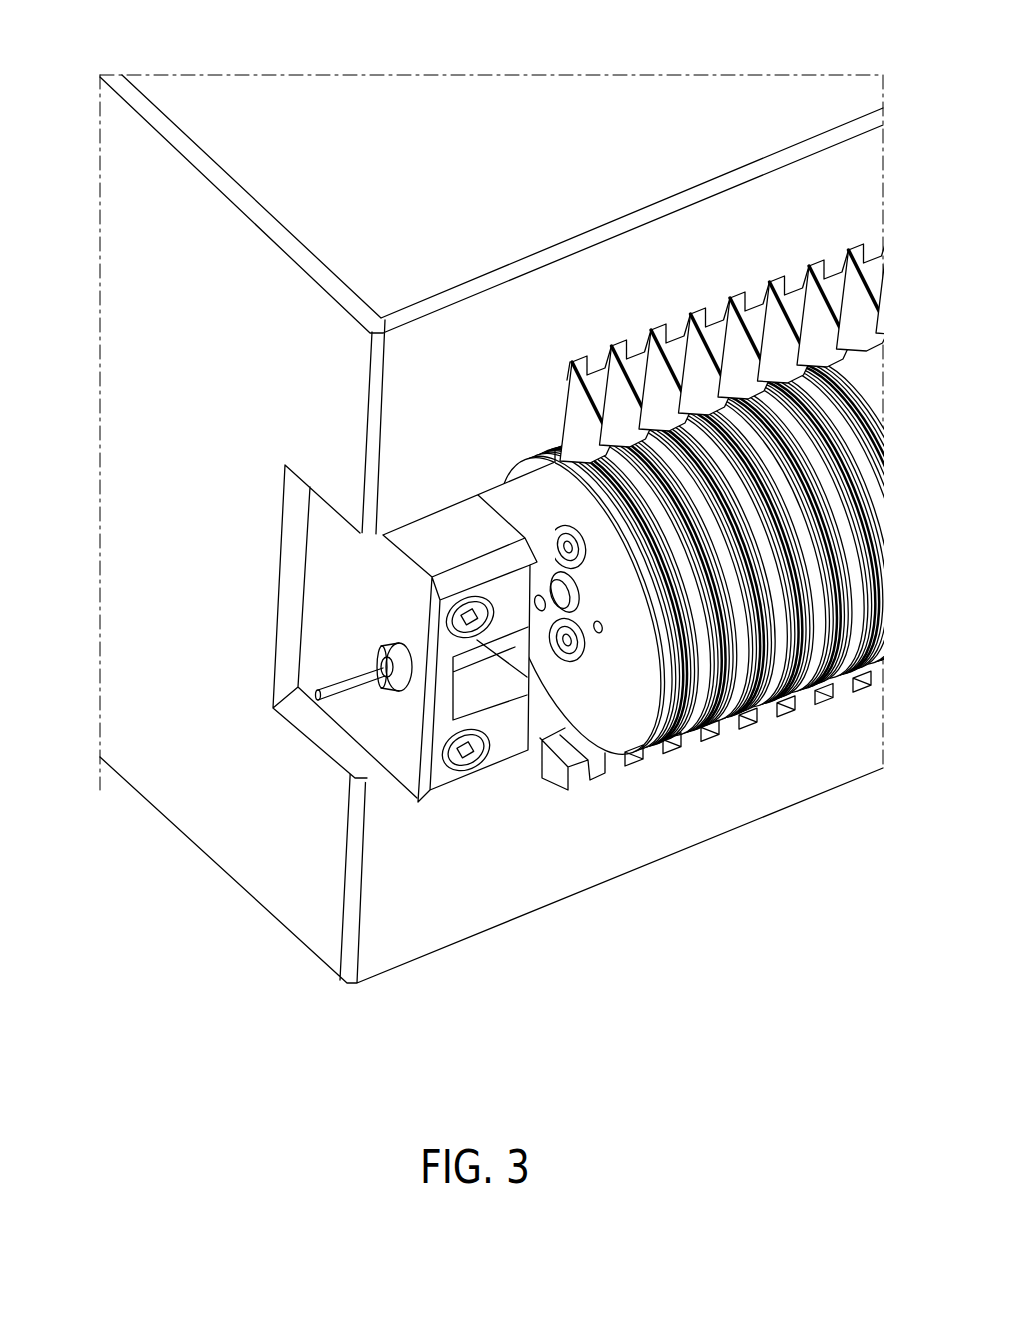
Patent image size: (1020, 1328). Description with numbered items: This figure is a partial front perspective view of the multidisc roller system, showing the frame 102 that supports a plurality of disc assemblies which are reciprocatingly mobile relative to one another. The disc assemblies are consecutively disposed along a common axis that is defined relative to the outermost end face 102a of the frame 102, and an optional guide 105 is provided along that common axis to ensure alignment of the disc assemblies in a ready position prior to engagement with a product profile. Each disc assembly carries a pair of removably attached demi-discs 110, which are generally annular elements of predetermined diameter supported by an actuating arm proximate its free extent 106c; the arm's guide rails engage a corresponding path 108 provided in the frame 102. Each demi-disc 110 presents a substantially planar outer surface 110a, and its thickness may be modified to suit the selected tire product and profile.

The frame 102 is at (421, 187).
The outermost end face 102a is at (199, 491).
The guide 105 is at (548, 596).
The free extent 106c is at (802, 317).
The path 108 is at (617, 337).
The demi-disc 110 is at (772, 696).
The outer surface 110a is at (631, 715).